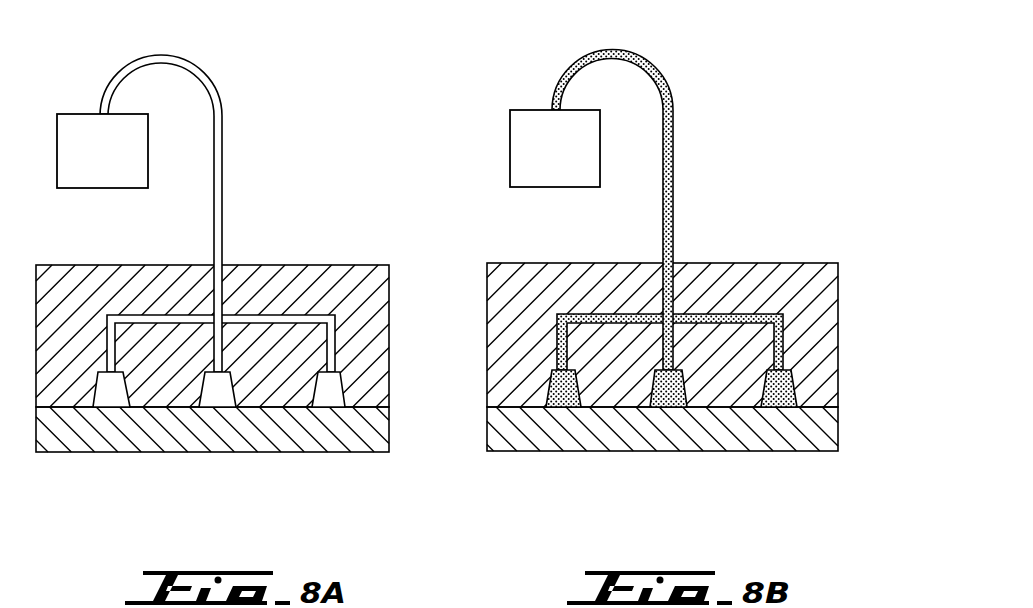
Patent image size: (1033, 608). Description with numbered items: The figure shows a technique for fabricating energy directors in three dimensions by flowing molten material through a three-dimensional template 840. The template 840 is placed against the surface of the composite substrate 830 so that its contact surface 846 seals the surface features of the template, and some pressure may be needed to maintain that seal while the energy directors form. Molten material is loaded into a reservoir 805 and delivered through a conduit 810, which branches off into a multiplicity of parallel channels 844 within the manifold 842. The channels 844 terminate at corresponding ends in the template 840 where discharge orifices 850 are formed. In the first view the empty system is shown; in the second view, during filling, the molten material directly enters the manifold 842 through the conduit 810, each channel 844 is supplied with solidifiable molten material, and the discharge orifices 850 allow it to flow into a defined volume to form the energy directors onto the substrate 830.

In FIG. 8A, the reservoir 805 is at (83, 113).
In FIG. 8B, the reservoir 805 is at (510, 165).
In FIG. 8A, the conduit 810 is at (195, 63).
In FIG. 8B, the conduit 810 is at (673, 98).
In FIG. 8A, the composite substrate 830 is at (248, 453).
In FIG. 8B, the composite substrate 830 is at (690, 451).
In FIG. 8A, the 3D template 840 is at (247, 264).
In FIG. 8B, the 3D template 840 is at (662, 335).
In FIG. 8A, the manifold 842 is at (307, 315).
In FIG. 8B, the manifold 842 is at (767, 312).
In FIG. 8A, the channels 844 is at (105, 350).
In FIG. 8B, the channels 844 is at (672, 345).
In FIG. 8A, the contact surface 846 is at (57, 453).
In FIG. 8A, the discharging orifices 850 is at (335, 392).
In FIG. 8B, the discharging orifices 850 is at (563, 407).